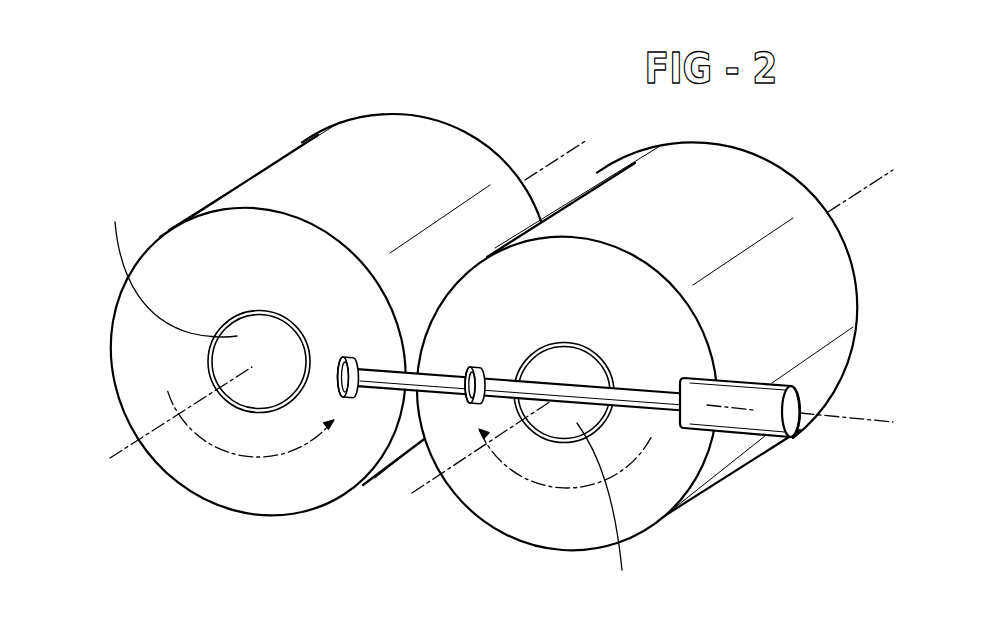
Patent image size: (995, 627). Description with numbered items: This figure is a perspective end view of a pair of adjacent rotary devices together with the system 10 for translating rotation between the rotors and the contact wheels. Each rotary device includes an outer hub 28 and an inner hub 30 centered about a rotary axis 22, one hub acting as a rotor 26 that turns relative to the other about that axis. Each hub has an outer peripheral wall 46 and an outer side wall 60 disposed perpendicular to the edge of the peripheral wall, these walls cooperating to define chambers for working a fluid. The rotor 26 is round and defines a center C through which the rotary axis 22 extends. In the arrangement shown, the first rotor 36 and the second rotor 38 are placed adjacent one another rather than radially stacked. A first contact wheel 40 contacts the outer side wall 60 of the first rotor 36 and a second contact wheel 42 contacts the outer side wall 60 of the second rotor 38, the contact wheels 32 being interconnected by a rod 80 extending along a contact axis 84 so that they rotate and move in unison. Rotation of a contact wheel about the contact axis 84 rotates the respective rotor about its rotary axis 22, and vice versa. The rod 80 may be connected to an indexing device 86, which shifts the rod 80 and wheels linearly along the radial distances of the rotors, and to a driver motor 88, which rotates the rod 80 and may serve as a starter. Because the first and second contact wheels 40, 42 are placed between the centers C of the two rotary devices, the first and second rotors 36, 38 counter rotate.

The system 10 is at (473, 343).
The rotary axis 22 is at (123, 445).
The rotor 26 is at (137, 304).
The outer hub 28 is at (198, 467).
The inner hub 30 is at (273, 392).
The contact wheels 32 is at (402, 346).
The first rotor 36 is at (668, 475).
The second rotor 38 is at (143, 355).
The first contact wheel 40 is at (465, 373).
The second contact wheel 42 is at (345, 367).
The outer peripheral wall 46 is at (327, 152).
The outer side wall 60 is at (195, 267).
The rod 80 is at (627, 401).
The contact axis 84 is at (882, 421).
The indexing device 86 is at (797, 420).
The driver motor 88 is at (766, 417).
The center C is at (261, 359).